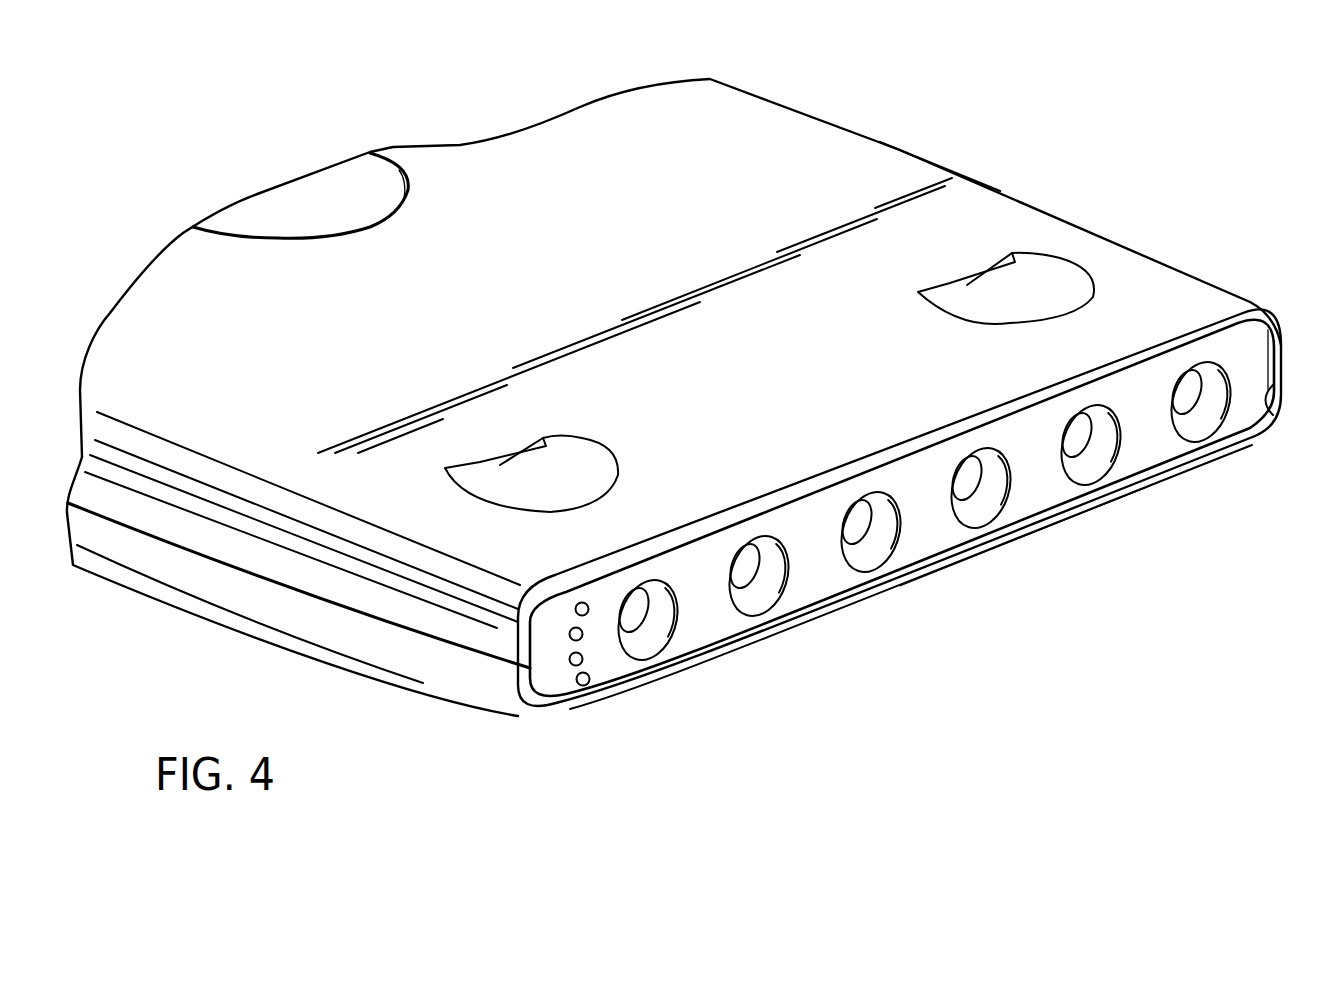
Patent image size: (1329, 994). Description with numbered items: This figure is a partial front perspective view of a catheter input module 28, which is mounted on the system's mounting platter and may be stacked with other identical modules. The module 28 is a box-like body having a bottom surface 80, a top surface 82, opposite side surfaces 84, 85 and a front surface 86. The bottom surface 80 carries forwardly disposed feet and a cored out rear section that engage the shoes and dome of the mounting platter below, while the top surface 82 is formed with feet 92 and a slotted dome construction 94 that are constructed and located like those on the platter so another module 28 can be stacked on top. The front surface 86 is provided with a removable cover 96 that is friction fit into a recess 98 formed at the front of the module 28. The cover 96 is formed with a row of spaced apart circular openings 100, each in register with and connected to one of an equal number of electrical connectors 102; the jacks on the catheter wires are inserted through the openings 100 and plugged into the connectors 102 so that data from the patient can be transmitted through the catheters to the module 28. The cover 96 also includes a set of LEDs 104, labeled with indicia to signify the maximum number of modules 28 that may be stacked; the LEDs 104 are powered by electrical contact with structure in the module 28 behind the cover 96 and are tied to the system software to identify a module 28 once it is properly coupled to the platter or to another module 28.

The catheter input module 28 is at (1245, 294).
The bottom surface 80 is at (270, 640).
The top surface 82 is at (845, 160).
The side surface 84 is at (992, 177).
The side surface 85 is at (408, 655).
The front surface 86 is at (942, 556).
The feet 92 is at (1060, 277).
The slotted dome construction 94 is at (283, 216).
The removable cover 96 is at (818, 580).
The recess 98 is at (1273, 413).
The circular openings 100 is at (646, 632).
The electrical connectors 102 is at (632, 604).
The LEDs 104 is at (579, 685).